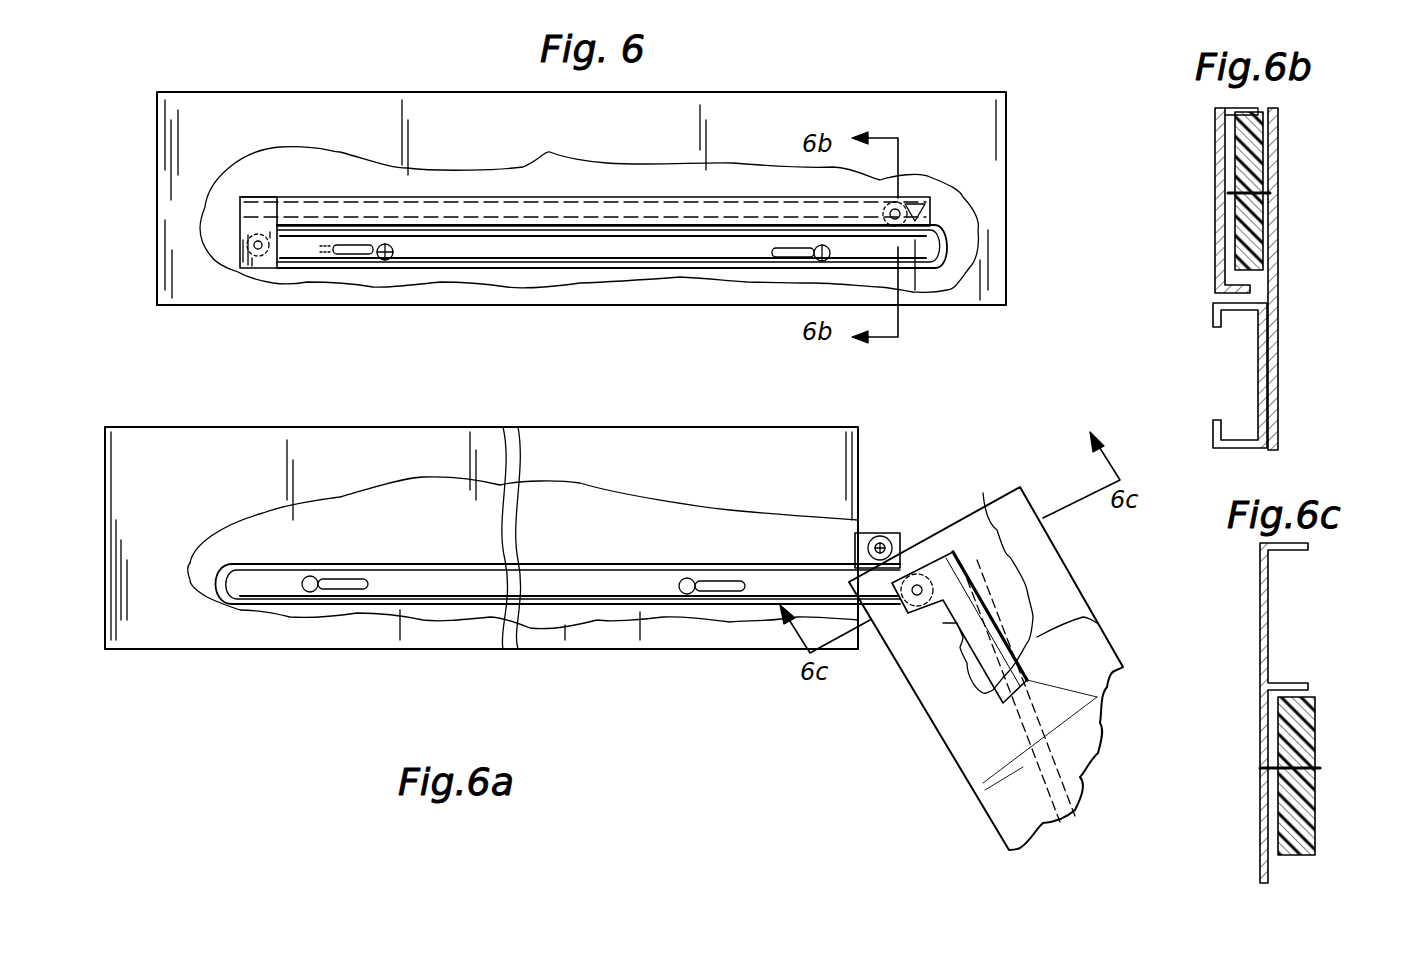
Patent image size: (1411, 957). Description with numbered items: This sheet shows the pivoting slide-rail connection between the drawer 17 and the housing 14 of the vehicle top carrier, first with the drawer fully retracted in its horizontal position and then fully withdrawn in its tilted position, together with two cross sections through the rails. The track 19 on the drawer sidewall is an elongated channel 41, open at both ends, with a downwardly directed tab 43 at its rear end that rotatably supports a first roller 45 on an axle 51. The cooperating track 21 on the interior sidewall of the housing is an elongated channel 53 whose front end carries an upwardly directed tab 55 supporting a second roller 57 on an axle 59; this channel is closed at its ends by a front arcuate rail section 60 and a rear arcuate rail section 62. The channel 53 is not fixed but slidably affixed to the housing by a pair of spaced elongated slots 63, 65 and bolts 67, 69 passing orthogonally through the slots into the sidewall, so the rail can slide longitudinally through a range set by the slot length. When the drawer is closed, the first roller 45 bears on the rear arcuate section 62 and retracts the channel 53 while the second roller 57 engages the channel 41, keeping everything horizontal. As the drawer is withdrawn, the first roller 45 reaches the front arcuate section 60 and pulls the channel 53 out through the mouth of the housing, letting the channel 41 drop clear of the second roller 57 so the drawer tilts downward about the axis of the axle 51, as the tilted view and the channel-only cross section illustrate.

In FIG. 6, the housing 14 is at (818, 92).
In FIG. 6A, the housing 14 is at (481, 538).
In FIG. 6A, the drawer 17 is at (1075, 592).
In FIG. 6, the track 19 is at (640, 200).
In FIG. 6A, the track 19 is at (968, 658).
In FIG. 6, the cooperating track 21 is at (620, 245).
In FIG. 6A, the cooperating track 21 is at (430, 603).
In FIG. 6, the elongated channel 41 is at (478, 212).
In FIG. 6A, the elongated channel 41 is at (1090, 621).
In FIG. 6B, the elongated channel 41 is at (1227, 256).
In FIG. 6C, the elongated channel 41 is at (1270, 595).
In FIG. 6, the downwardly directed tab 43 is at (243, 268).
In FIG. 6C, the downwardly directed tab 43 is at (1262, 792).
In FIG. 6, the first roller 45 is at (290, 268).
In FIG. 6C, the first roller 45 is at (1318, 726).
In FIG. 6, the axle 51 is at (250, 246).
In FIG. 6A, the axle 51 is at (905, 610).
In FIG. 6C, the axle 51 is at (1320, 770).
In FIG. 6, the elongated channel 53 is at (536, 250).
In FIG. 6A, the elongated channel 53 is at (592, 596).
In FIG. 6B, the elongated channel 53 is at (1256, 366).
In FIG. 6A, the upwardly directed tab 55 is at (882, 533).
In FIG. 6B, the upwardly directed tab 55 is at (1280, 175).
In FIG. 6, the second roller 57 is at (905, 205).
In FIG. 6A, the second roller 57 is at (884, 545).
In FIG. 6B, the second roller 57 is at (1228, 132).
In FIG. 6A, the axle 59 is at (890, 560).
In FIG. 6B, the axle 59 is at (1228, 208).
In FIG. 6, the front arcuate rail section 60 is at (932, 270).
In FIG. 6A, the rear arcuate rail section 62 is at (244, 603).
In FIG. 6, the elongated slot 63 is at (782, 252).
In FIG. 6A, the elongated slot 63 is at (730, 586).
In FIG. 6, the elongated slot 65 is at (345, 250).
In FIG. 6A, the elongated slot 65 is at (350, 583).
In FIG. 6, the bolt 67 is at (820, 262).
In FIG. 6A, the bolt 67 is at (690, 595).
In FIG. 6, the bolt 69 is at (392, 262).
In FIG. 6A, the bolt 69 is at (314, 593).